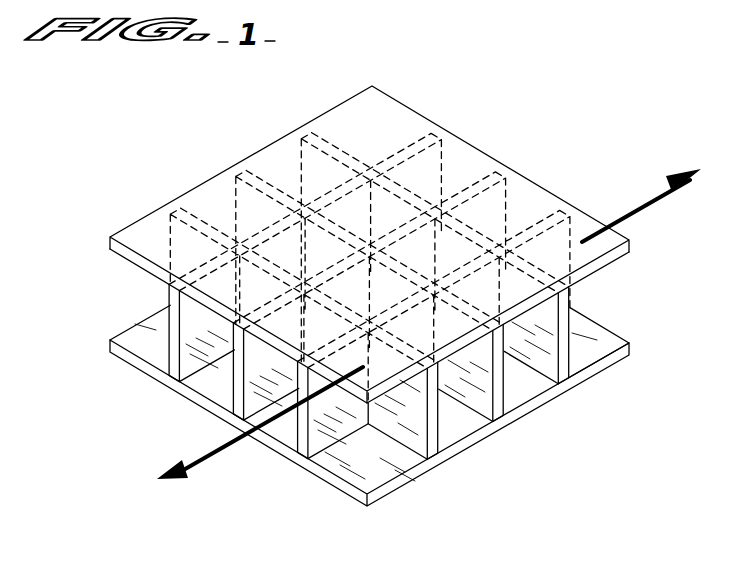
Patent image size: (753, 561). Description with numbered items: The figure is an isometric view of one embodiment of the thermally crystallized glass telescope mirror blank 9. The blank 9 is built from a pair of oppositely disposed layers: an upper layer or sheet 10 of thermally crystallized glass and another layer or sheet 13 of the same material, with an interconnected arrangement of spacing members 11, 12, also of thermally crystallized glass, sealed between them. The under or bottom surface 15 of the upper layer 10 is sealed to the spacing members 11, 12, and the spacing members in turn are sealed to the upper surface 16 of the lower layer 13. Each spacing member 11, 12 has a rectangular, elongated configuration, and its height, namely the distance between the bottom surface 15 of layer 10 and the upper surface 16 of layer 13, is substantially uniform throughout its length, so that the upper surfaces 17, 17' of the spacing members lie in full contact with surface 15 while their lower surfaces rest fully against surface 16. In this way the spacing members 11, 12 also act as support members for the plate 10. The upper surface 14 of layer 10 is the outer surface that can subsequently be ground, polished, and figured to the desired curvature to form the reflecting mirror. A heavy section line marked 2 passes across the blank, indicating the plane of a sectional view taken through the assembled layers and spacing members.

The telescope mirror blank 9 is at (630, 250).
The upper layer or sheet 10 is at (528, 197).
The spacing member 11 is at (315, 430).
The spacing member 12 is at (420, 428).
The layer or sheet 13 is at (369, 480).
The upper surface 14 is at (397, 100).
The bottom surface 15 is at (590, 278).
The upper surface 16 is at (214, 386).
The upper surface of spacing member 17 is at (399, 250).
The upper surface of spacing member 17' is at (369, 245).
The section line 2- 2 is at (157, 436).